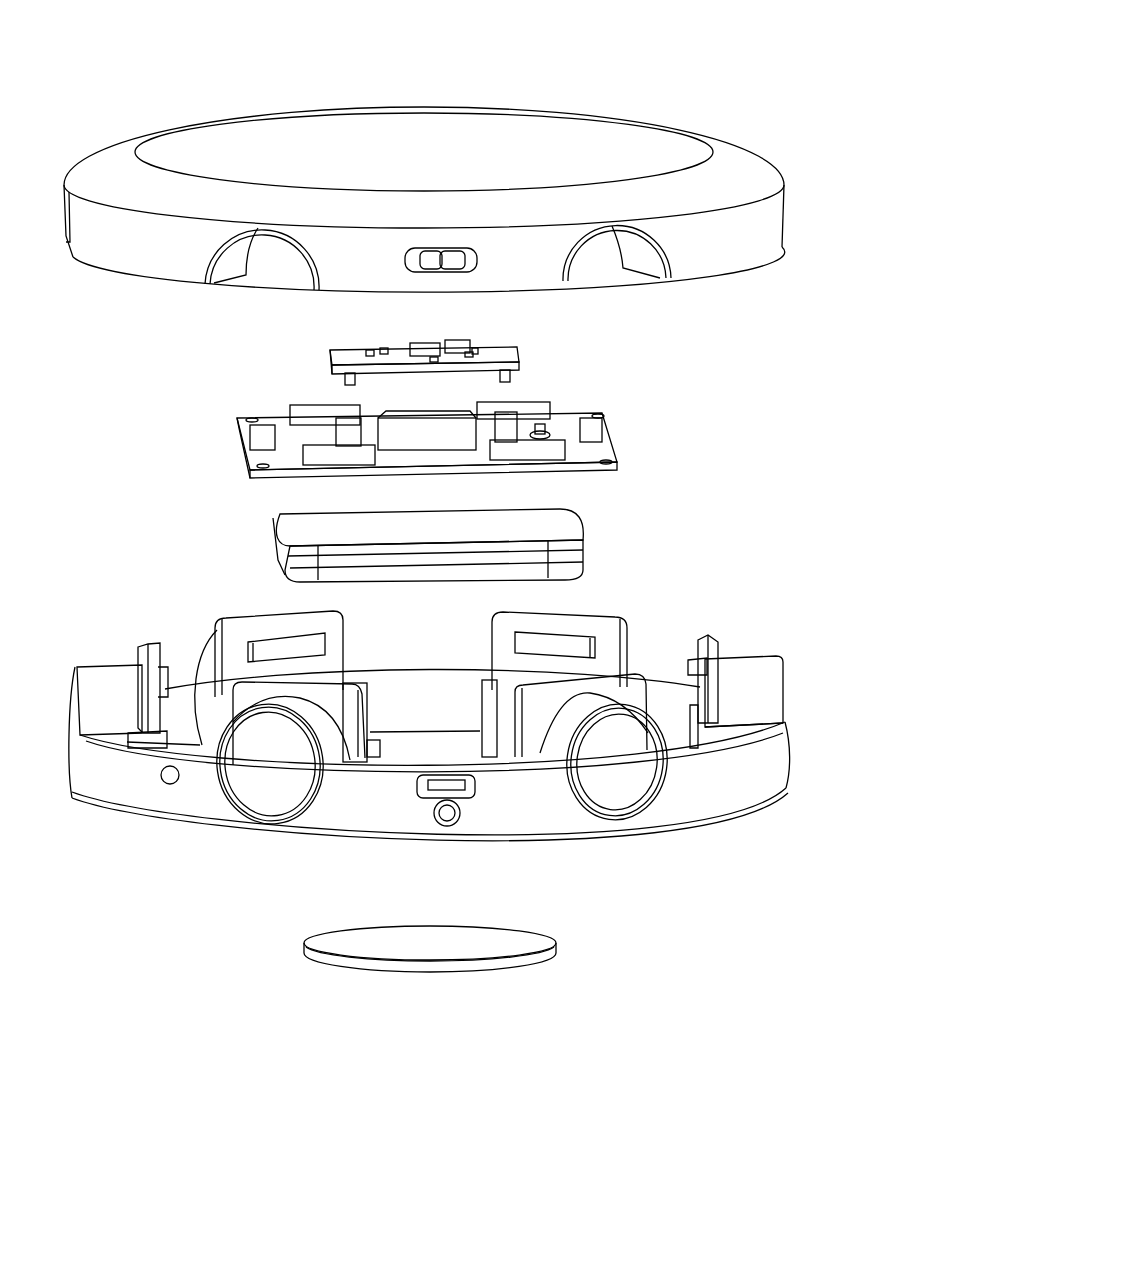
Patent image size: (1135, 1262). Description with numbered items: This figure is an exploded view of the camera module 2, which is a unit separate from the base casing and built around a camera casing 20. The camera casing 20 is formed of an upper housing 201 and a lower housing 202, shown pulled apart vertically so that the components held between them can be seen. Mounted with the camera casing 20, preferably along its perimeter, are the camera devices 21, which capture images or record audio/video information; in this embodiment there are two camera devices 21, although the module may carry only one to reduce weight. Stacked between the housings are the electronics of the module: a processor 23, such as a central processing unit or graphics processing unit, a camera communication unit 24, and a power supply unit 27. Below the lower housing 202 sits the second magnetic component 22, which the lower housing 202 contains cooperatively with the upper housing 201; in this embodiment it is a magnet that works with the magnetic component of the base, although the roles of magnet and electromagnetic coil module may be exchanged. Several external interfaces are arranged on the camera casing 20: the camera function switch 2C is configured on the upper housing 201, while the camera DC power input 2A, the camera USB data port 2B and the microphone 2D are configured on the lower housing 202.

The camera module 2 is at (669, 48).
The camera casing 20 is at (882, 373).
The upper housing 201 is at (474, 262).
The lower housing 202 is at (477, 703).
The camera function switch 2C is at (400, 258).
The camera communication unit 24 is at (505, 354).
The processor 23 is at (612, 449).
The power supply unit 27 is at (556, 528).
The camera device 21 is at (252, 782).
The microphone 2D is at (170, 784).
The camera USB data port 2B is at (415, 786).
The camera DC power input 2A is at (447, 826).
The second magnetic component 22 is at (525, 940).